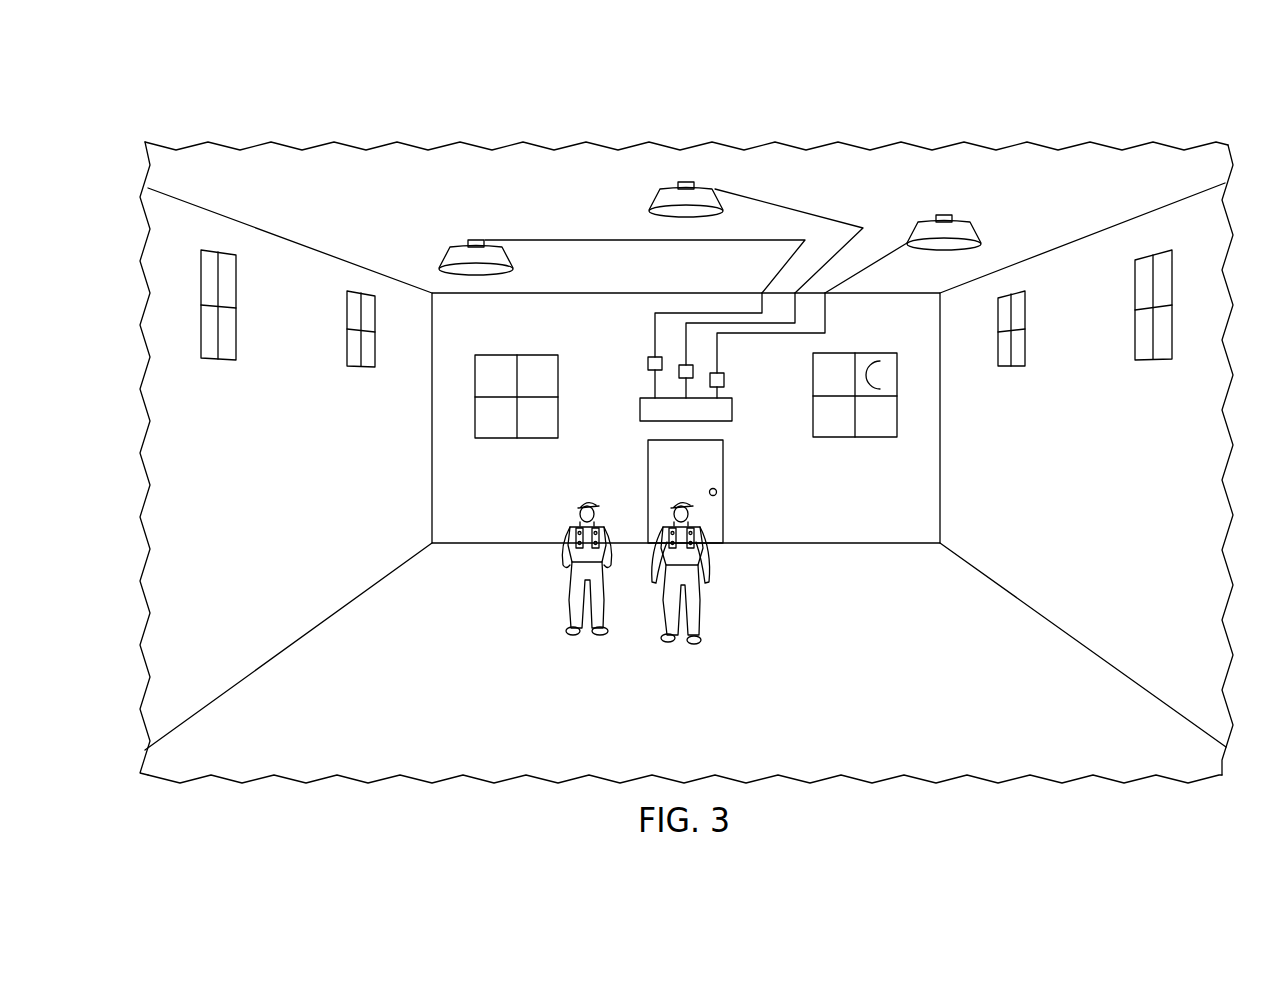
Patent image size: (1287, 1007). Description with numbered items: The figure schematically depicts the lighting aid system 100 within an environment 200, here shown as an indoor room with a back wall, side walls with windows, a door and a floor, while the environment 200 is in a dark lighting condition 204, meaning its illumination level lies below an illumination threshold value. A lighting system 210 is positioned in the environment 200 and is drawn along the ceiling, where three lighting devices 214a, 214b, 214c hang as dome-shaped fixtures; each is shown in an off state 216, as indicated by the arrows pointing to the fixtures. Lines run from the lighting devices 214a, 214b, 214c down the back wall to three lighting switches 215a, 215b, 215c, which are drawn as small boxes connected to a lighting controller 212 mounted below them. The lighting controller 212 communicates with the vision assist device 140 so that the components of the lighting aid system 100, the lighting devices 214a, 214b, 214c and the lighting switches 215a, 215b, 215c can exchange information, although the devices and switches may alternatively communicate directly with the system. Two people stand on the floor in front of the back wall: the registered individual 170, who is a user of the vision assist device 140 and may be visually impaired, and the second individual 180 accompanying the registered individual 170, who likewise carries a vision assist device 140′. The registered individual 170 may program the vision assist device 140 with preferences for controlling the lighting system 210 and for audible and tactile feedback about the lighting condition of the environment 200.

The lighting aid system 100 is at (1186, 111).
The environment 200 is at (1242, 210).
The dark lighting condition 204 is at (1175, 231).
The lighting system 210 is at (890, 229).
The lighting controller 212 is at (642, 398).
The lighting device 214a is at (450, 258).
The lighting device 214b is at (665, 200).
The lighting device 214c is at (970, 232).
The lighting switch 215a is at (648, 362).
The lighting switch 215b is at (694, 371).
The lighting switch 215c is at (725, 380).
The off state 216 is at (456, 229).
The registered individual 170 is at (682, 500).
The second individual 180 is at (585, 500).
The vision assist device 140 is at (693, 553).
The vision assist device 140′ is at (569, 530).